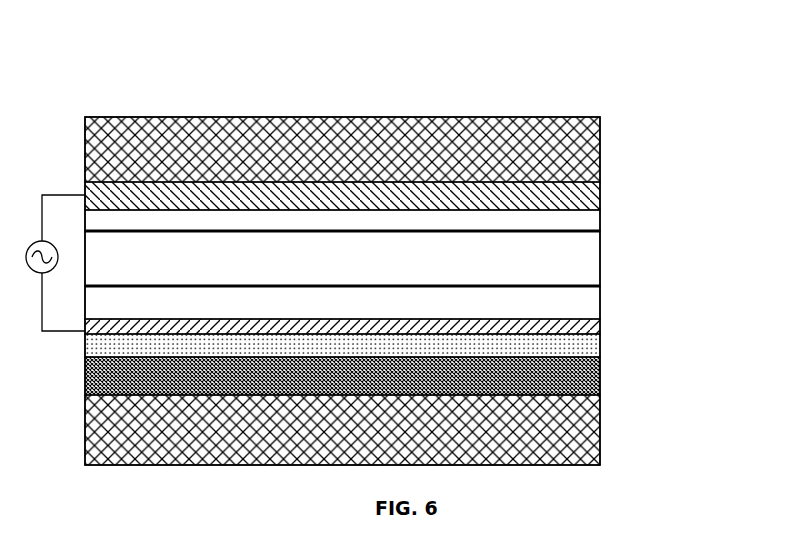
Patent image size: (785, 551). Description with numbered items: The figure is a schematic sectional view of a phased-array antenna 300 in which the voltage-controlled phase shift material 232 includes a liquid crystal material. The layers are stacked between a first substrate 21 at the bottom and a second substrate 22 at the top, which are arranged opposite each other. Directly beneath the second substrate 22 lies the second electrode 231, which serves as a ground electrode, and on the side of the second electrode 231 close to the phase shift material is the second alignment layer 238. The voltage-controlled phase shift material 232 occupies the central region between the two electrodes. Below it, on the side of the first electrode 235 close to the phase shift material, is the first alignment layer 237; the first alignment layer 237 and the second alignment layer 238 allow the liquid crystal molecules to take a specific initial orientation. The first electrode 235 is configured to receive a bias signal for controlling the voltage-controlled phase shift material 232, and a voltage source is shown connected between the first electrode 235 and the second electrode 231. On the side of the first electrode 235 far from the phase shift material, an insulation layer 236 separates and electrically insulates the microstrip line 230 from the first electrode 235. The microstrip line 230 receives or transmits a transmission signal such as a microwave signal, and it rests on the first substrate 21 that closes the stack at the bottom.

The phased-array antenna 300 is at (74, 92).
The second substrate 22 is at (600, 152).
The second electrode 231 is at (600, 196).
The second alignment layer 238 is at (600, 217).
The voltage-controlled phase shift material 232 is at (600, 263).
The first alignment layer 237 is at (600, 300).
The first electrode 235 is at (600, 331).
The insulation layer 236 is at (600, 351).
The microstrip line 230 is at (600, 378).
The first substrate 21 is at (600, 427).